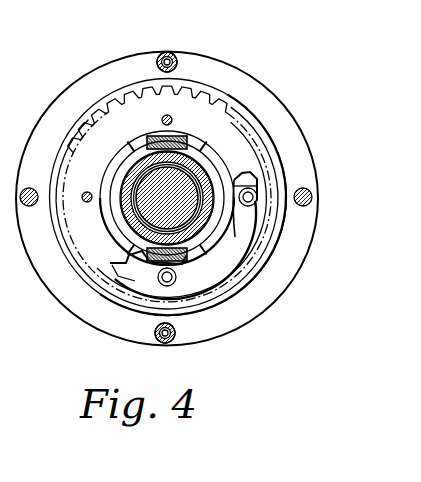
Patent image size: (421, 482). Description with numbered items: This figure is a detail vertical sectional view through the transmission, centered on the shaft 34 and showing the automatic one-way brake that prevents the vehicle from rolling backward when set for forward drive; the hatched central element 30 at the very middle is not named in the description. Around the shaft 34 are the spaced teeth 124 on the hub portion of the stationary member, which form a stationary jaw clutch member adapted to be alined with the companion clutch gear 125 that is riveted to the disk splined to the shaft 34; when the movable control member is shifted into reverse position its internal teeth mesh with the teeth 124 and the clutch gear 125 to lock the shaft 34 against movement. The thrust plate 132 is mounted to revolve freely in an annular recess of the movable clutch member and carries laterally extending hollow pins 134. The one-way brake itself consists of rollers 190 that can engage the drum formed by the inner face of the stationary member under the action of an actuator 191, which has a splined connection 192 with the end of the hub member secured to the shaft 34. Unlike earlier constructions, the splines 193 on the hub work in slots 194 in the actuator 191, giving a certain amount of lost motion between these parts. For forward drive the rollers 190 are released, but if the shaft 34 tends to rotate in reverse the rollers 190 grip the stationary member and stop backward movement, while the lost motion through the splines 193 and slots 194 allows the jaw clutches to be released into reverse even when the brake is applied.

The shaft 30 is at (152, 206).
The shaft 34 is at (138, 232).
The spaced teeth 124 is at (225, 282).
The clutch gear 125 is at (95, 128).
The thrust plate 132 is at (268, 108).
The hollow pins 134 is at (178, 58).
The rollers 190 is at (251, 196).
The actuator 191 is at (113, 177).
The splined connection 192 is at (233, 178).
The splines 193 is at (160, 134).
The slots 194 is at (228, 157).